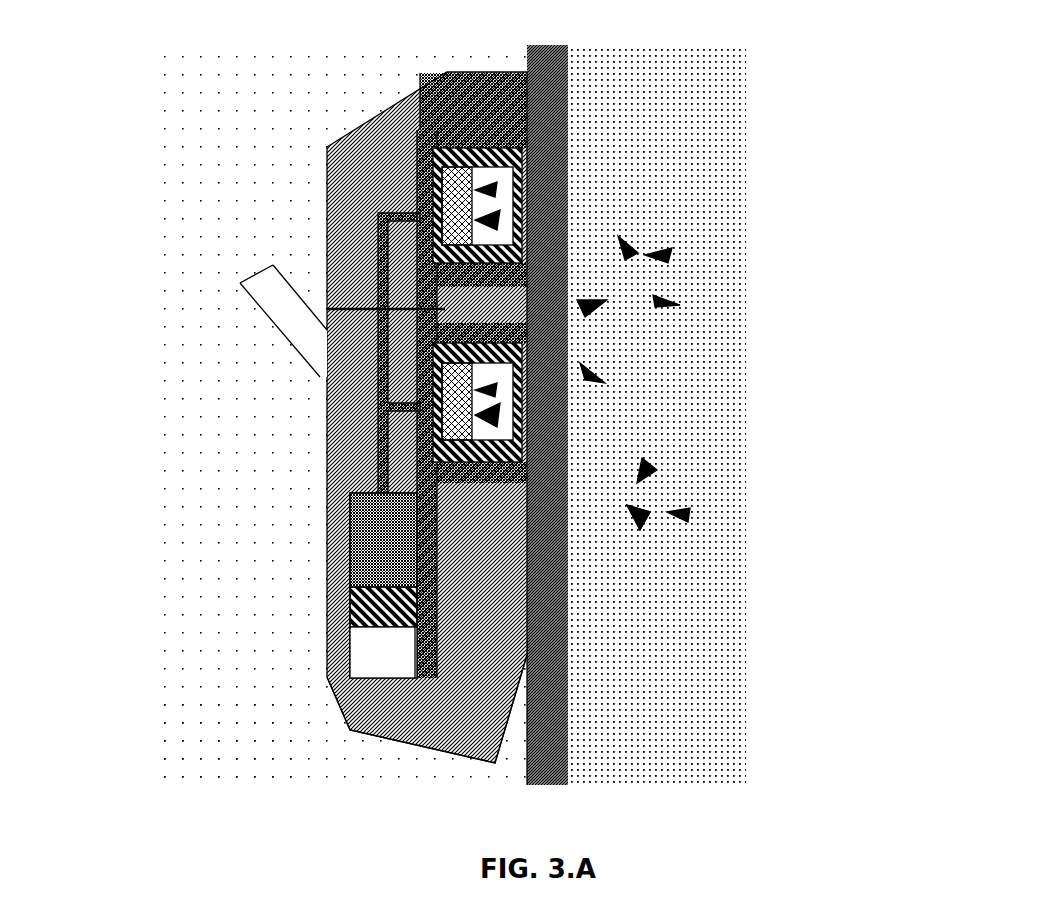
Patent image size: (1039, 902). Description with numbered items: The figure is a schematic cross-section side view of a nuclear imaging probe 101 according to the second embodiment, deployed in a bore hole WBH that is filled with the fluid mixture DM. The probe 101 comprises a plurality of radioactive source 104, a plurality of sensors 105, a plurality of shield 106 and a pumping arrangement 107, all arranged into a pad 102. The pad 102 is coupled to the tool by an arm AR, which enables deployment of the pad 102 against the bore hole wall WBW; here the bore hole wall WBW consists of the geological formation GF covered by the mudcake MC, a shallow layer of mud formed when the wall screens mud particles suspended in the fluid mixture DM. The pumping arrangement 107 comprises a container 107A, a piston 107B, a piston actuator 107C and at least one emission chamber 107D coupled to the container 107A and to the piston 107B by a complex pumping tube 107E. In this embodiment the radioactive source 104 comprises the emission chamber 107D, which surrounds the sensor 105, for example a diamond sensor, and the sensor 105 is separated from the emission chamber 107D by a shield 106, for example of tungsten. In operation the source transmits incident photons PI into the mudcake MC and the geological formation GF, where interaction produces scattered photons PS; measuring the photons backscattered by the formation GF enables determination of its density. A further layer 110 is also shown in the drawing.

The nuclear imaging probe 101 is at (200, 127).
The pad 102 is at (422, 724).
The radioactive source 104 is at (425, 134).
The sensor 105 is at (425, 170).
The shield 106 is at (435, 247).
The pumping arrangement 107 is at (233, 585).
The container 107A is at (352, 520).
The piston 107B is at (352, 600).
The piston actuator 107C is at (352, 645).
The emission chamber 107D is at (327, 309).
The pumping tube 107E is at (385, 407).
The top layer 110 is at (447, 72).
The arm AR is at (286, 322).
The bore hole WBH is at (160, 70).
The fluid mixture DM is at (205, 774).
The mudcake MC is at (562, 40).
The geological formation GF is at (737, 740).
The scattered photon PS is at (647, 470).
The incident photon PI is at (648, 530).
The bore hole wall WBW is at (527, 718).